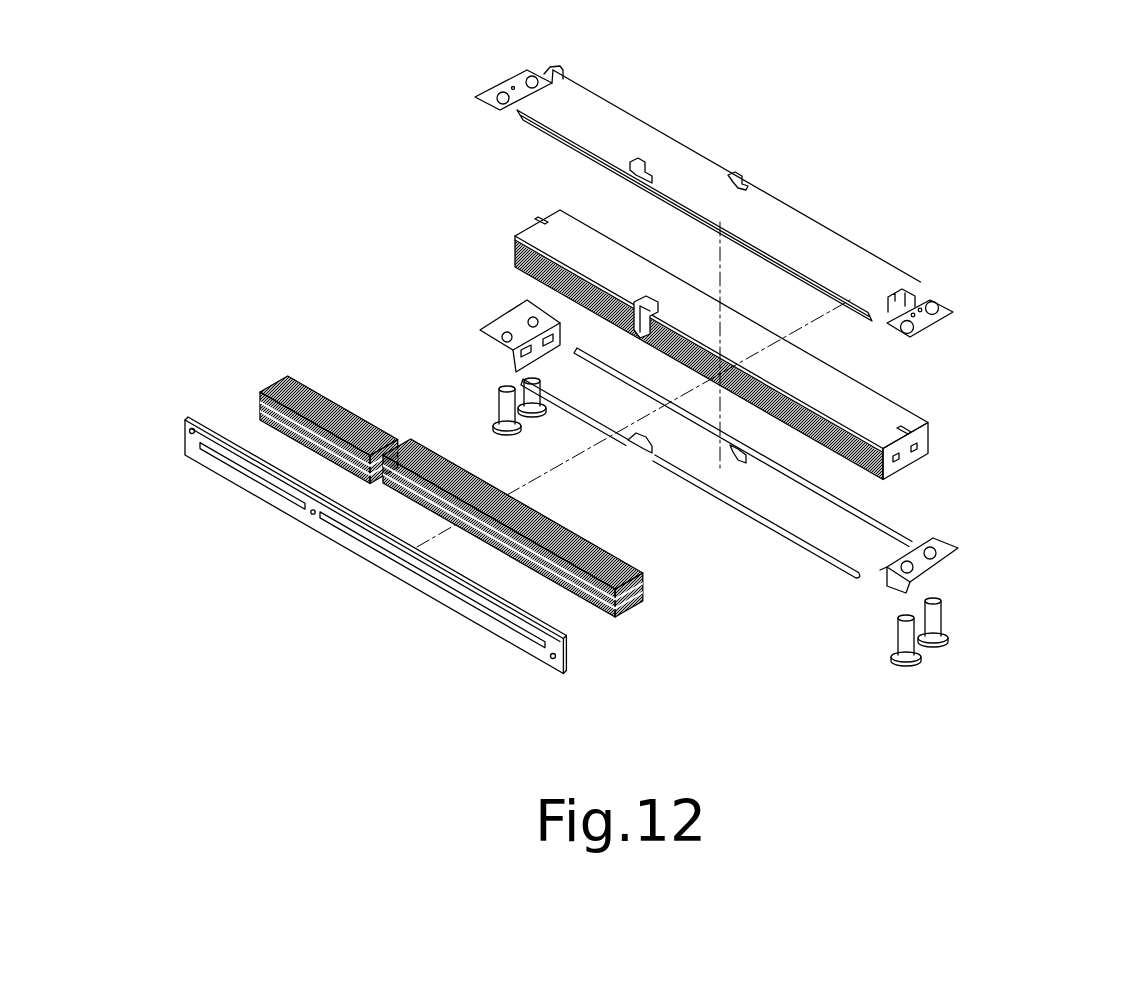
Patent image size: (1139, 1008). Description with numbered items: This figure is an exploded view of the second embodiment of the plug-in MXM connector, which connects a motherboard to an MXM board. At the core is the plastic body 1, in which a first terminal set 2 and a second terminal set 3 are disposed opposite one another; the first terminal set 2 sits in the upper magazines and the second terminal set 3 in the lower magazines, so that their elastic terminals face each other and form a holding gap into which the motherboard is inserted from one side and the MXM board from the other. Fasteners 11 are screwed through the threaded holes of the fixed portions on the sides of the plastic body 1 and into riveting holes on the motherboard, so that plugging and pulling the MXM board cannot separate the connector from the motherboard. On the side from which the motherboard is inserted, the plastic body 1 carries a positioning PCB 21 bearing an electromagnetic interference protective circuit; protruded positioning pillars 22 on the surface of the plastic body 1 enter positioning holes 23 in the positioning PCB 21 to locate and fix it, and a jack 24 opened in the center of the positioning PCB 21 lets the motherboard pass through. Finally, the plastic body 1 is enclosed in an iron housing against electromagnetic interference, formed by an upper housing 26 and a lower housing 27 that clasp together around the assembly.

The plastic body 1 is at (885, 415).
The first terminal set 2 is at (637, 613).
The second terminal set 3 is at (276, 378).
The fastener 11 is at (500, 400).
The positioning PCB 21 is at (375, 589).
The positioning pillar 22 is at (638, 335).
The positioning hole 23 is at (316, 517).
The jack 24 is at (437, 580).
The upper housing 26 is at (803, 240).
The lower housing 27 is at (868, 543).